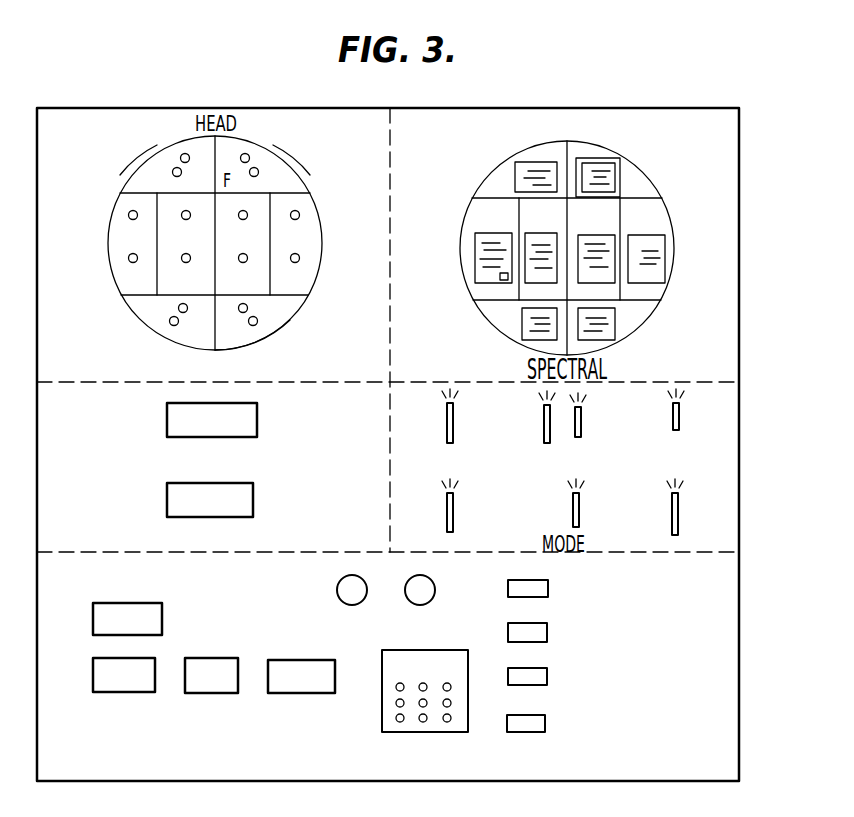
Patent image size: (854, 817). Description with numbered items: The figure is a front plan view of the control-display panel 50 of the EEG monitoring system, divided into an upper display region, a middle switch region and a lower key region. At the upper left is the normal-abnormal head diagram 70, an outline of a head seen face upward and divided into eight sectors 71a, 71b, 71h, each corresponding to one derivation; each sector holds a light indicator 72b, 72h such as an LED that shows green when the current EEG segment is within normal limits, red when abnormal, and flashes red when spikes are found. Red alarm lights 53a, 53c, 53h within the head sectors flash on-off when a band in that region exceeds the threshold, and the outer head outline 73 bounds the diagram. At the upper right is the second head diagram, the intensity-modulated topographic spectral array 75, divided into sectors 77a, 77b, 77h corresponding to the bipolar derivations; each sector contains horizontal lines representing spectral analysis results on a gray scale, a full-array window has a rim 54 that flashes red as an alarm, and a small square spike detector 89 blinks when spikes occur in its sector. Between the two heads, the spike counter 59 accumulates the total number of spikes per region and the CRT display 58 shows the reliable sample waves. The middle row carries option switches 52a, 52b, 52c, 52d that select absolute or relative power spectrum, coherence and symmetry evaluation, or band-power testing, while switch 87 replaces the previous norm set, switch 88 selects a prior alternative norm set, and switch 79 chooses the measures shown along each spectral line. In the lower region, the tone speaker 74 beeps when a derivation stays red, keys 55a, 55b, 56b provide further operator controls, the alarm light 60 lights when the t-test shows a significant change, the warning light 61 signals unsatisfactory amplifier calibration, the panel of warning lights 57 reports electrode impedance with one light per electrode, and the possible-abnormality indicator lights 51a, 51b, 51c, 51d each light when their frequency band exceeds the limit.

The control-display panel 50 is at (750, 421).
The possible abnormality visual indicator light 51a is at (548, 588).
The possible abnormality visual indicator light 51b is at (547, 631).
The possible abnormality visual indicator light 51c is at (547, 679).
The possible abnormality visual indicator light 51d is at (545, 723).
The switch 52a is at (446, 418).
The switch 52b is at (543, 412).
The switch 52c is at (582, 420).
The switch 52d is at (679, 420).
The alarm light 53a is at (181, 155).
The alarm light 53c is at (129, 213).
The alarm light 53h is at (238, 308).
The rim 54 is at (592, 157).
The BLOOD key 55a is at (123, 692).
The TEMP key 55b is at (203, 693).
The CALIB key 56b is at (283, 693).
The warning lights 57 is at (410, 723).
The CRT display 58 is at (253, 503).
The spike counter 59 is at (257, 425).
The alarm light 60 is at (364, 581).
The warning light 61 is at (435, 585).
The normal-abnormal head diagram 70 is at (205, 248).
The sector 71a is at (133, 177).
The sector 71b is at (299, 180).
The sector 71h is at (275, 333).
The light indicator 72b is at (257, 169).
The light indicator 72h is at (258, 320).
The head outline 73 is at (292, 319).
The tone speaker 74 is at (162, 618).
The intensity-modulated topographic spectral array 75 is at (579, 239).
The sector 77a is at (514, 178).
The sector 77b is at (616, 177).
The sector 77h is at (609, 331).
The switch 79 is at (672, 498).
The switch 87 is at (453, 510).
The switch 88 is at (573, 517).
The spike detector 89 is at (500, 279).